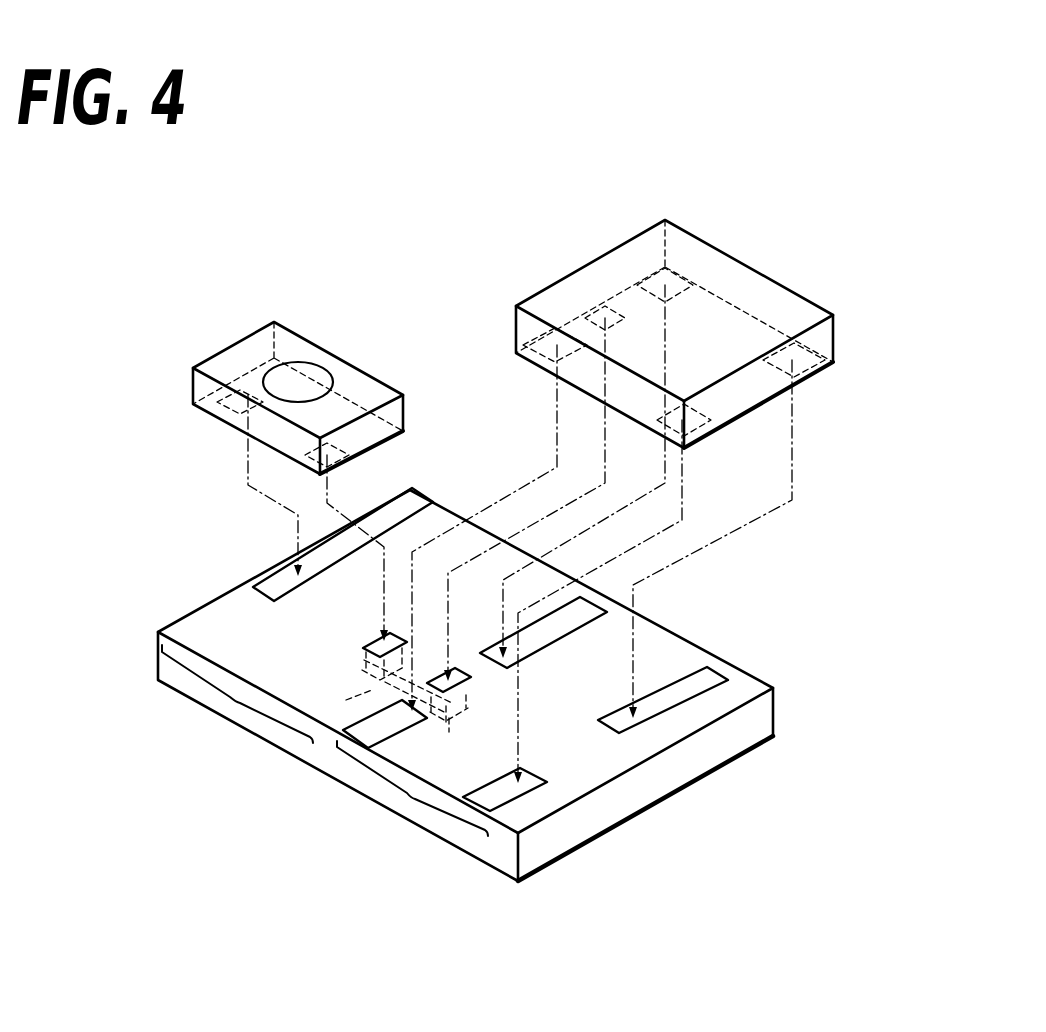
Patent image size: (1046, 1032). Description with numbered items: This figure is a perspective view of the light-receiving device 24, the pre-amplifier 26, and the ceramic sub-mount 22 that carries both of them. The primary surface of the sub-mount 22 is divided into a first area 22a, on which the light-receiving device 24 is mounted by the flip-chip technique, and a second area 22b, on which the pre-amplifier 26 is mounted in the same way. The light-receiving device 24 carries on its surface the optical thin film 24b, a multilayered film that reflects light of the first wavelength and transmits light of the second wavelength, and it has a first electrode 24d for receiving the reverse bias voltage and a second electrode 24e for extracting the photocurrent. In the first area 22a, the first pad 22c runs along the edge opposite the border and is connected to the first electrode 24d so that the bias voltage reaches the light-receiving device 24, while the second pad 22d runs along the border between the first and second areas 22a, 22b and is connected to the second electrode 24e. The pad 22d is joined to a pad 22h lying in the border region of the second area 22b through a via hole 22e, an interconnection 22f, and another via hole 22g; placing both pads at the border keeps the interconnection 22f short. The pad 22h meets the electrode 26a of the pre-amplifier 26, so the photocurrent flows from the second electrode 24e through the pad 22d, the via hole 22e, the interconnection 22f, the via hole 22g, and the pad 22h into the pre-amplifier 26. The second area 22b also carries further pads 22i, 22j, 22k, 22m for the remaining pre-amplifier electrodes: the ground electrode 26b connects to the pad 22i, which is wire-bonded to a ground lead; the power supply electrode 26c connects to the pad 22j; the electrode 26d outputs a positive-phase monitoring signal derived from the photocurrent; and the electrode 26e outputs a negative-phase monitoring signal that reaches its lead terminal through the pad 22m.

The sub-mount 22 is at (776, 712).
The first area 22a is at (232, 705).
The second area 22b is at (407, 797).
The first pad 22c is at (277, 585).
The second pad 22d is at (383, 640).
The via hole 22e is at (372, 668).
The interconnection 22f is at (382, 684).
The via hole 22g is at (450, 722).
The pad 22h is at (456, 672).
The pad 22i is at (370, 733).
The pad 22j is at (553, 630).
The pad 22k is at (693, 686).
The pad 22m is at (530, 790).
The light-receiving device 24 is at (190, 372).
The optical thin film 24b is at (312, 363).
The first electrode 24d is at (222, 410).
The second electrode 24e is at (367, 453).
The pre-amplifier 26 is at (806, 290).
The electrode 26a is at (600, 312).
The ground electrode 26b is at (548, 338).
The electrode 26c is at (693, 280).
The electrode 26d is at (815, 383).
The electrode 26e is at (706, 440).